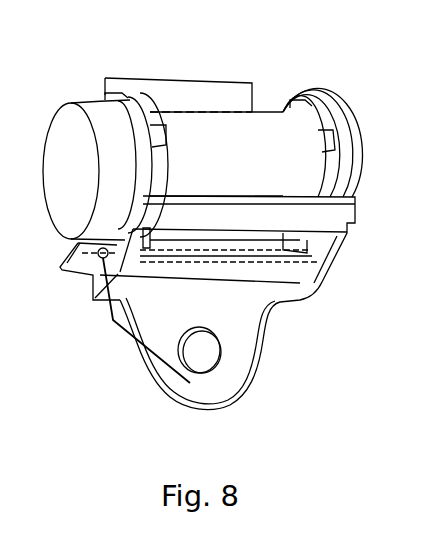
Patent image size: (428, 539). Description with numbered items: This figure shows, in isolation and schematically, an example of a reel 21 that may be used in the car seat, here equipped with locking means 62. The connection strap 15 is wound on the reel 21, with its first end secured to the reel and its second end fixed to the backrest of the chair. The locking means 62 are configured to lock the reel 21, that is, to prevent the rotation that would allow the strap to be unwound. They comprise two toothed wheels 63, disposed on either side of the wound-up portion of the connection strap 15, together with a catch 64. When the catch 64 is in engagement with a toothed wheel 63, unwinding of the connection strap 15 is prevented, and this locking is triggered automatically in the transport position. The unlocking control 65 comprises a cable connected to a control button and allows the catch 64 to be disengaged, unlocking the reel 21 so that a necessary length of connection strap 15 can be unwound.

The connection strap 15 is at (233, 103).
The reel 21 is at (70, 163).
The locking means 62 is at (283, 267).
The toothed wheels 63 is at (155, 120).
The catch 64 is at (247, 273).
The unlocking control 65 is at (122, 337).